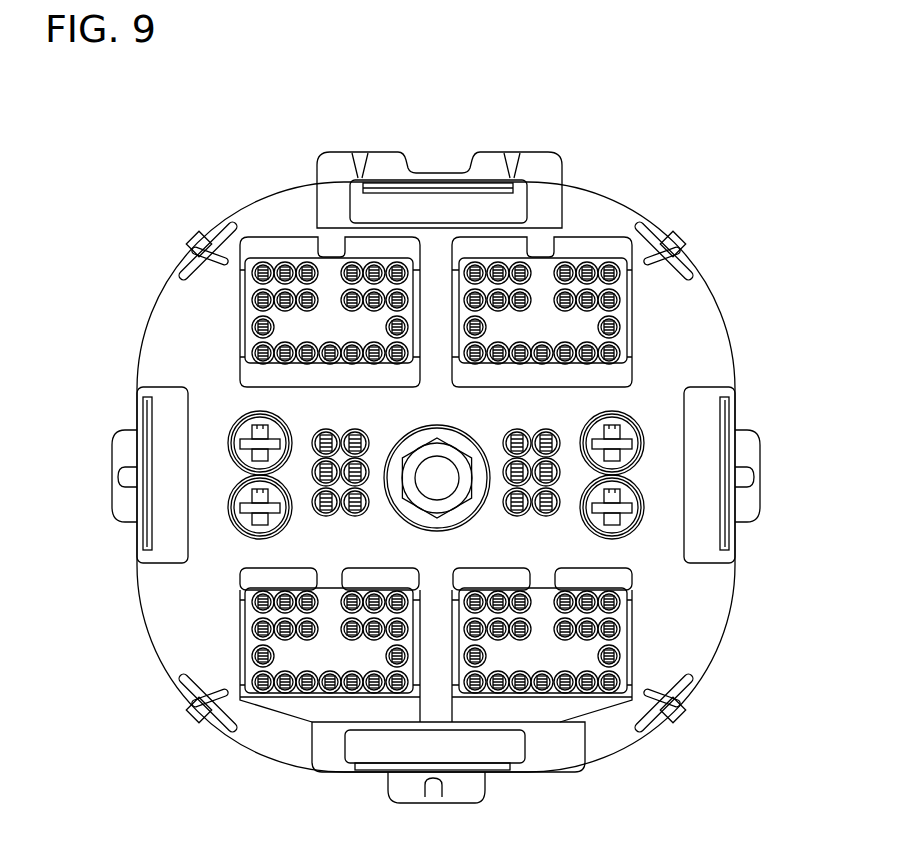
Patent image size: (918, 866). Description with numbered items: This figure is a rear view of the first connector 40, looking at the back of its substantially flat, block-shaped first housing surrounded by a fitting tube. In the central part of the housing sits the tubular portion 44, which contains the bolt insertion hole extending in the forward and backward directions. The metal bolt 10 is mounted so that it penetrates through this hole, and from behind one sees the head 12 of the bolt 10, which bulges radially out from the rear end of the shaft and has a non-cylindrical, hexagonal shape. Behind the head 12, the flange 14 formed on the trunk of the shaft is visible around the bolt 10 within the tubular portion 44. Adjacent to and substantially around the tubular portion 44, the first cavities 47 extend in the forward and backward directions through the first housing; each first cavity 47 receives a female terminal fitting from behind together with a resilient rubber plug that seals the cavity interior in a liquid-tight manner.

The first connector 40 is at (701, 248).
The first cavities 47 is at (287, 267).
The bolt 10 is at (453, 455).
The head 12 is at (420, 453).
The flange 14 is at (408, 510).
The tubular portion 44 is at (472, 517).